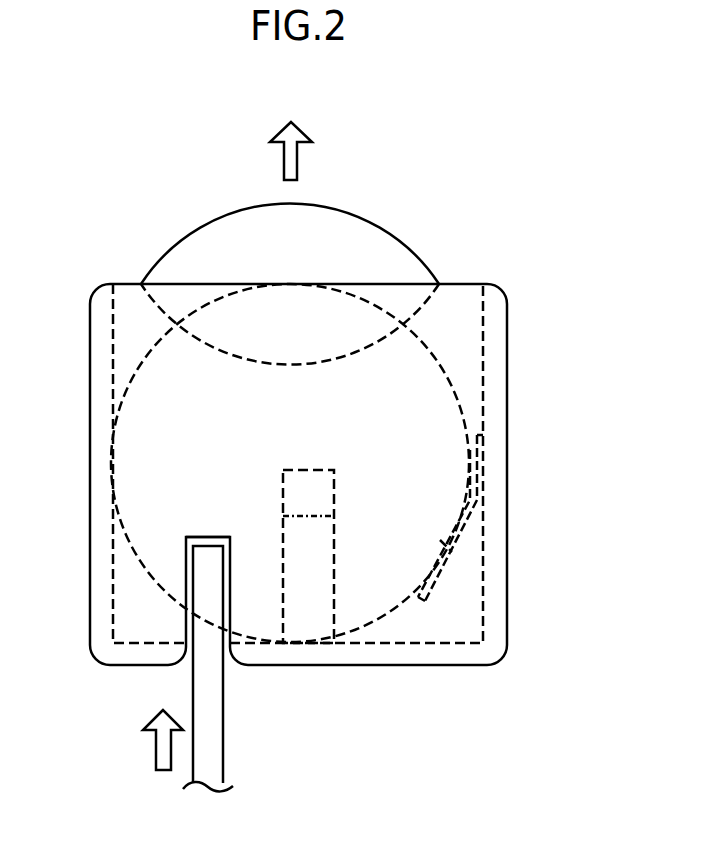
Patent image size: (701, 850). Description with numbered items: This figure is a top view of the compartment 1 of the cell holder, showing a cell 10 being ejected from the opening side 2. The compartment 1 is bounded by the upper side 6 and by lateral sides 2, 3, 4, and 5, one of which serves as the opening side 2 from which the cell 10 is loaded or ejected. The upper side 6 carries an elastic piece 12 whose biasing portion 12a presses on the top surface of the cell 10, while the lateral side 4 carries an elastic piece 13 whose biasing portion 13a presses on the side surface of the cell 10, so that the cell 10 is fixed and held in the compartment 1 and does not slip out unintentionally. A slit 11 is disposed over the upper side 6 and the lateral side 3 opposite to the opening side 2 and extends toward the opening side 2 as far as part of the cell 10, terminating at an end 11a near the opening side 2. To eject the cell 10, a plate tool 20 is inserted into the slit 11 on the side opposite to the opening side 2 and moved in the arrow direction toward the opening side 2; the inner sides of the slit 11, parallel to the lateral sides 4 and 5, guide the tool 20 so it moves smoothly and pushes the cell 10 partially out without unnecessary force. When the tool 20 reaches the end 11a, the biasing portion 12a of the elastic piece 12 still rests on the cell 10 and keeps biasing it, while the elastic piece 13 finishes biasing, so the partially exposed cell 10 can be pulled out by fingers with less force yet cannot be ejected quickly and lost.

The compartment 1 is at (529, 203).
The opening side 2 is at (403, 284).
The lateral side 3 is at (398, 665).
The lateral side 4 is at (507, 409).
The lateral side 5 is at (89, 383).
The upper side 6 is at (460, 618).
The cell 10 is at (208, 238).
The slit 11 is at (231, 630).
The end of the slit 11a is at (217, 537).
The elastic piece 12 is at (308, 600).
The biasing portion 12a is at (313, 515).
The elastic piece 13 is at (443, 568).
The biasing portion 13a is at (445, 545).
The plate tool 20 is at (224, 745).